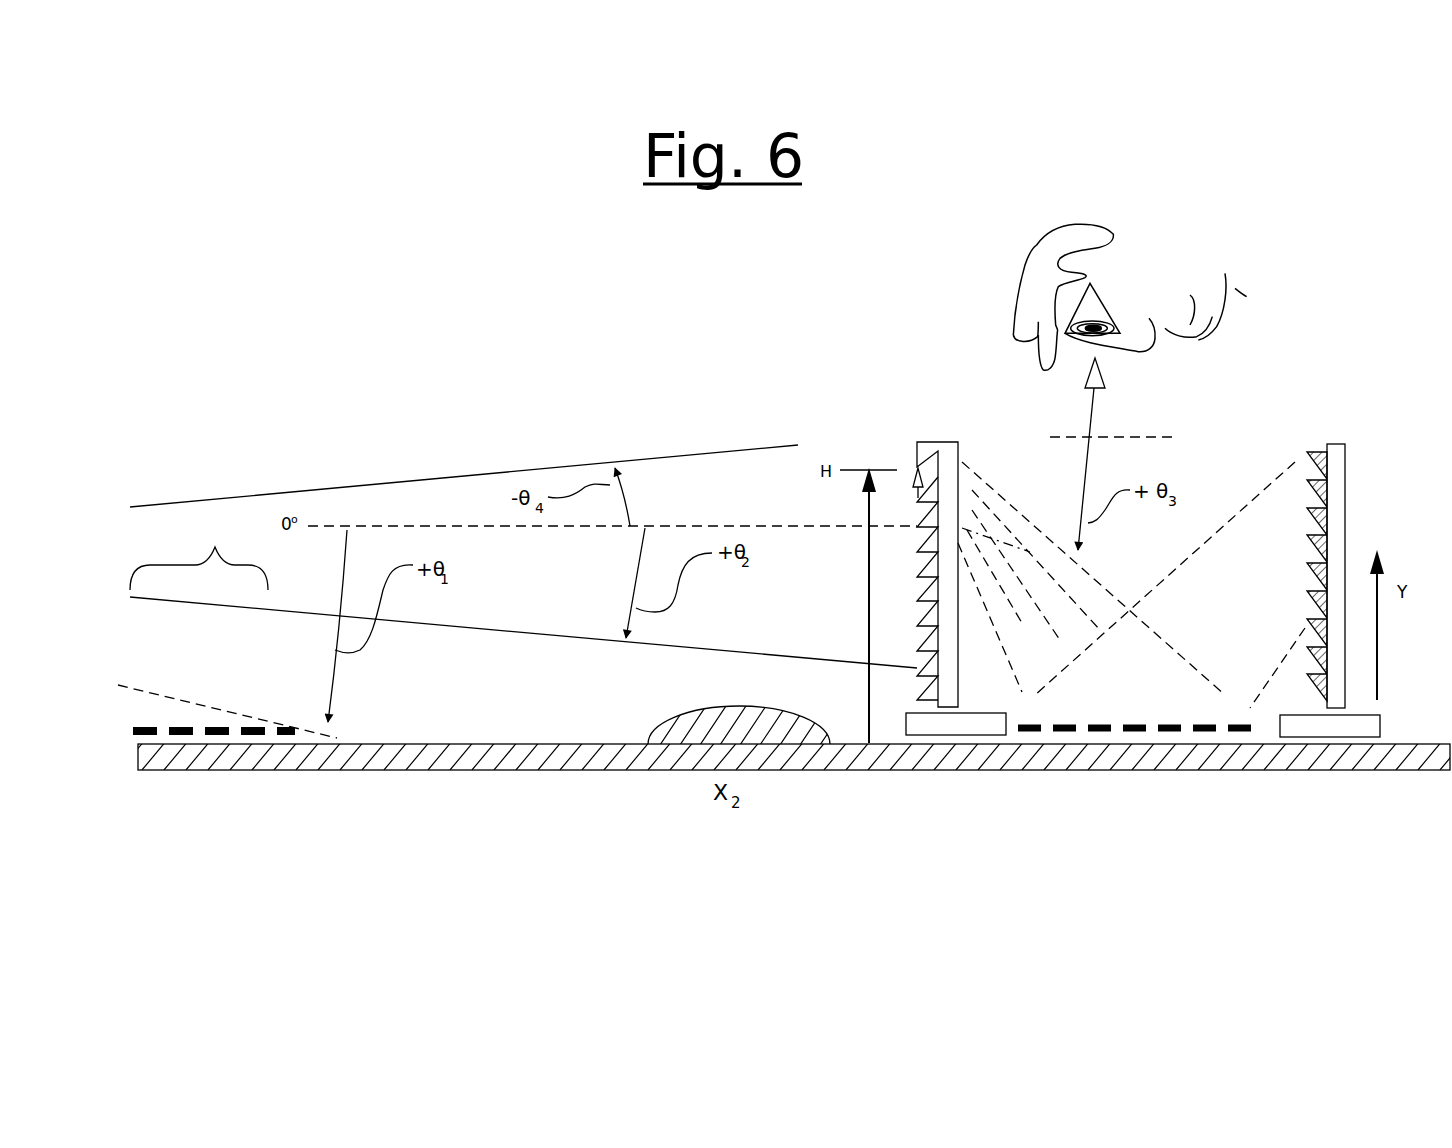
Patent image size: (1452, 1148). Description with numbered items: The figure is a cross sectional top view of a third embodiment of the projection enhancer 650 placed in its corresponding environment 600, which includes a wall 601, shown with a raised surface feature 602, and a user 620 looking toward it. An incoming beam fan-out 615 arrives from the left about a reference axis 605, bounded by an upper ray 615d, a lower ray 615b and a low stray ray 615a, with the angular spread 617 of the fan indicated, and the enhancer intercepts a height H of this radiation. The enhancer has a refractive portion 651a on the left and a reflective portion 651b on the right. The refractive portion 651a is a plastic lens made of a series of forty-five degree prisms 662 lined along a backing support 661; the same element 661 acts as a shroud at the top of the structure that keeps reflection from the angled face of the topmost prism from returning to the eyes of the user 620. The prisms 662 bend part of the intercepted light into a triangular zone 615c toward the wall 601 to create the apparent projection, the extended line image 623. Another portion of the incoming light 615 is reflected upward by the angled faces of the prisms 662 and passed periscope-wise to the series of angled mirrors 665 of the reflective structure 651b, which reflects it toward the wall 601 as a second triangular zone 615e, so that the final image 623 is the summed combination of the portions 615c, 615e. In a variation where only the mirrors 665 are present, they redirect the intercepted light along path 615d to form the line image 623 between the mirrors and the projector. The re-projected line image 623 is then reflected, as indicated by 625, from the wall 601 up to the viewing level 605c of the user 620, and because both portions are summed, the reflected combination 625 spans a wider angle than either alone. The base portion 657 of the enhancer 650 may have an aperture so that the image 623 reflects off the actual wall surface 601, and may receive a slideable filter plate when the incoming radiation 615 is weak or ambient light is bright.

The environment 600 is at (787, 259).
The wall 601 is at (540, 743).
The bump on substrate 602 is at (690, 712).
The optical axis (0 degree reference) 605 is at (690, 524).
The eye-level reference line 605c is at (1094, 423).
The incoming beam fan-out 615 is at (523, 528).
The light ray toward substrate 615a is at (215, 712).
The lower boundary ray 615b is at (742, 650).
The triangular zone 615c is at (1023, 596).
The path 615d is at (545, 468).
The triangular zone 615e is at (1253, 574).
The beam angular range 617 is at (199, 555).
The user 620 is at (1233, 287).
The extended line image 623 is at (1127, 716).
The reflected combination 625 is at (1105, 373).
The projection enhancer 650 is at (1318, 581).
The refractive optics 651a is at (917, 522).
The reflective structure 651b is at (1333, 440).
The base portion 657 is at (1353, 728).
The shroud 661 is at (917, 453).
The 45 degree prisms 662 is at (933, 640).
The angled mirrors 665 is at (1308, 498).